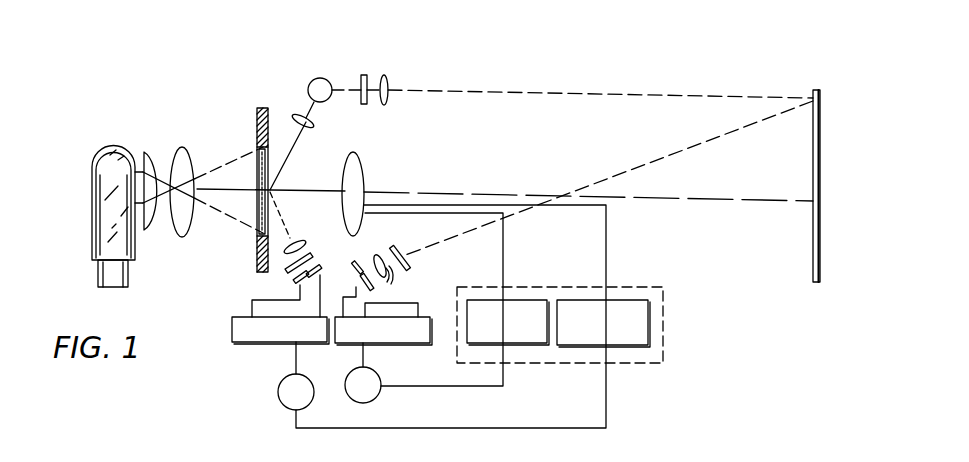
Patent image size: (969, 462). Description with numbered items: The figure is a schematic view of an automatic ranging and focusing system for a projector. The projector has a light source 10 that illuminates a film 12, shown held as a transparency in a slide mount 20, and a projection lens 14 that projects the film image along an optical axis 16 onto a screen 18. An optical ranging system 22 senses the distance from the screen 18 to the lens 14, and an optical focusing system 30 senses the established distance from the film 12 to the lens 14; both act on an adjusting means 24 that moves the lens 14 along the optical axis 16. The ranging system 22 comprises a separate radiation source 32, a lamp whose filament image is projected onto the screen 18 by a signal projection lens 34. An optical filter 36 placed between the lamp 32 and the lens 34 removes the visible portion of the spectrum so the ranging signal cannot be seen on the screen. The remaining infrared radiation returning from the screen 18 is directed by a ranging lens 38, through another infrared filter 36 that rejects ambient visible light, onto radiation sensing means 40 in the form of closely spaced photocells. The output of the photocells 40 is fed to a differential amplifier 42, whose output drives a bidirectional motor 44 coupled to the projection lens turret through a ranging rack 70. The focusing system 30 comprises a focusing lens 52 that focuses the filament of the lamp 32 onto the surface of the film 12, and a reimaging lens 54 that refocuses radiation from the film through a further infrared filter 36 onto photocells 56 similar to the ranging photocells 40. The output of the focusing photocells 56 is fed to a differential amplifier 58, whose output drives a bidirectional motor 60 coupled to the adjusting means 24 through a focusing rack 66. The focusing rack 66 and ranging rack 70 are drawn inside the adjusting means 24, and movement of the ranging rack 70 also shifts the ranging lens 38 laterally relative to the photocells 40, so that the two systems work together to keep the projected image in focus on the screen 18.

The light source 10 is at (93, 173).
The film 12 is at (258, 205).
The projection lens 14 is at (362, 168).
The optical axis 16 is at (738, 202).
The screen 18 is at (822, 115).
The slide mount 20 is at (257, 108).
The optical ranging system 22 is at (375, 254).
The adjusting means 24 is at (660, 330).
The optical focusing system 30 is at (289, 277).
The radiation source 32 is at (313, 79).
The signal projection lens 34 is at (388, 80).
The optical filter 36 is at (363, 75).
The ranging lens 38 is at (389, 272).
The radiation sensing means 40 is at (370, 284).
The differential amplifier 42 is at (428, 344).
The bidirectional motor 44 is at (381, 396).
The focusing lens 52 is at (293, 115).
The reimaging lens 54 is at (293, 237).
The photocells 56 is at (322, 265).
The differential amplifier 58 is at (235, 342).
The bidirectional motor 60 is at (278, 402).
The focusing rack 66 is at (616, 302).
The ranging rack 70 is at (523, 302).